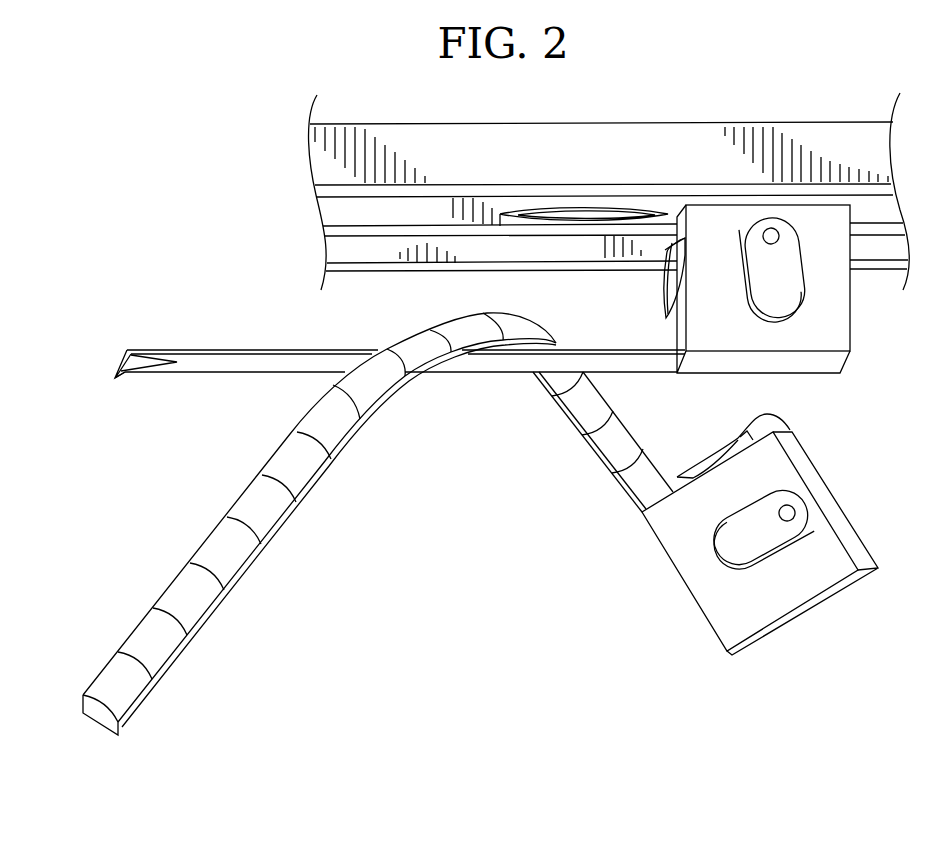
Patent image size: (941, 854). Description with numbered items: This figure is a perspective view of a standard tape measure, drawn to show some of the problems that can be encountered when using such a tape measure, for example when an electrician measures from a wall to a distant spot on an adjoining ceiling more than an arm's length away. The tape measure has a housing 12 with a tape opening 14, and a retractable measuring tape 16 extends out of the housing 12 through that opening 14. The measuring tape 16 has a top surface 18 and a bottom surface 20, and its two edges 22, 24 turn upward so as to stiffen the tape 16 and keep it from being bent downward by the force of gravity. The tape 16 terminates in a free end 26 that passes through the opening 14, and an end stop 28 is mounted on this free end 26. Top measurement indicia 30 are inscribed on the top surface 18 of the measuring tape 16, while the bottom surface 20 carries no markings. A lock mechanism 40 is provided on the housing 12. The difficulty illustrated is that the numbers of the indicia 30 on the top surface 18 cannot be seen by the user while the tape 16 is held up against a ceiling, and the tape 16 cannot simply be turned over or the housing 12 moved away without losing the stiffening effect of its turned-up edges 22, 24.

The housing 12 is at (822, 330).
The tape opening 14 is at (675, 347).
The retractable measuring tape 16 is at (363, 557).
The top surface 18 is at (157, 657).
The bottom surface 20 is at (182, 367).
The edge 22 is at (266, 350).
The edge 24 is at (277, 372).
The free end 26 is at (128, 350).
The end stop 28 is at (126, 373).
The top measurement indicia 30 is at (218, 537).
The lock mechanism 40 is at (752, 420).